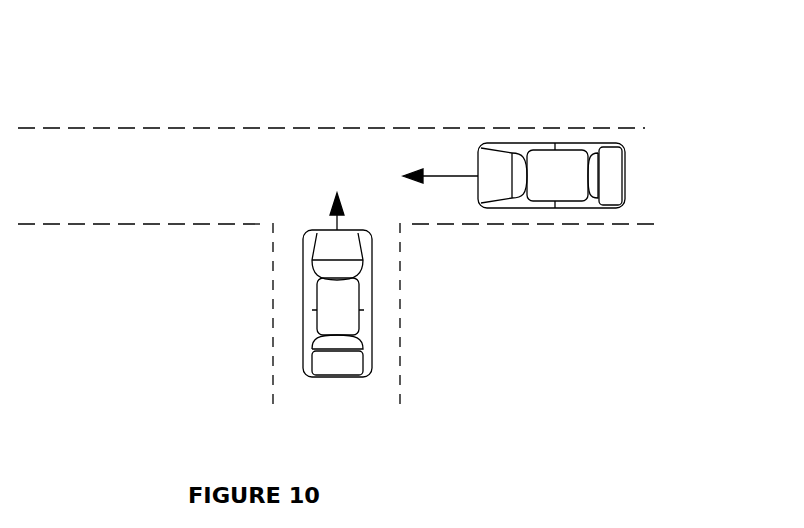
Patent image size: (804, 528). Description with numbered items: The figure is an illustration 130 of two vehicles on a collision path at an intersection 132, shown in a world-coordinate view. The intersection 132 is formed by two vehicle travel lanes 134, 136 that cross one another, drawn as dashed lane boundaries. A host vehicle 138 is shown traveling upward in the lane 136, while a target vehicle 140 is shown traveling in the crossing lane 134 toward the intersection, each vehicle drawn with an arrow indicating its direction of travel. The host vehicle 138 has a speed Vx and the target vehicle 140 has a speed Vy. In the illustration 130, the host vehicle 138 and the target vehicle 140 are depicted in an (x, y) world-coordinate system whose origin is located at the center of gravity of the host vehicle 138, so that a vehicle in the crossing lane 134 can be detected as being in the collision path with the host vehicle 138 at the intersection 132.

The illustration 130 is at (275, 68).
The intersection 132 is at (240, 287).
The vehicle travel lane 134 is at (131, 127).
The vehicle travel lane 136 is at (400, 335).
The host vehicle 138 is at (372, 254).
The target vehicle 140 is at (560, 143).